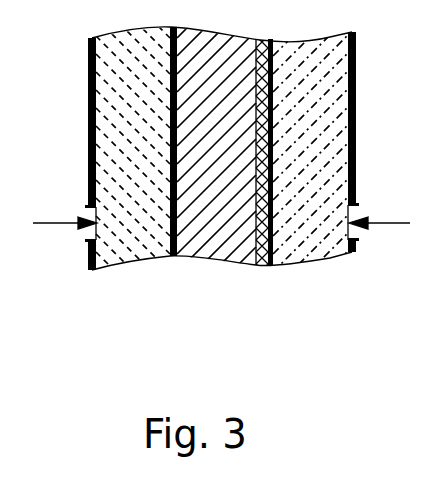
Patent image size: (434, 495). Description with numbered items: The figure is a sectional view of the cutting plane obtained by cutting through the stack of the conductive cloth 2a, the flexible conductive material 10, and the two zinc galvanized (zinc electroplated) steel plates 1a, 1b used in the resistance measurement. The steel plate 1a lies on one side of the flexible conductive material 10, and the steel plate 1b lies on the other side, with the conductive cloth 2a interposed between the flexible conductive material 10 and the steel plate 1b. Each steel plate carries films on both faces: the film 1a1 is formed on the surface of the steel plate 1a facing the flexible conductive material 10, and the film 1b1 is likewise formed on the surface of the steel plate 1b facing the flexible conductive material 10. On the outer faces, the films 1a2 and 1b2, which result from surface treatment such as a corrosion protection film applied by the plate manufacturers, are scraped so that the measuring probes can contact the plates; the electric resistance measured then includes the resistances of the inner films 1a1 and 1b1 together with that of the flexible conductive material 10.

The zinc galvanized steel plate 1a is at (143, 251).
The film 1a1 is at (173, 257).
The film 1a2 is at (91, 272).
The flexible conductive material 10 is at (222, 259).
The conductive cloth 2a is at (262, 268).
The zinc galvanized steel plate 1b is at (310, 250).
The film 1b1 is at (270, 268).
The film 1b2 is at (352, 255).